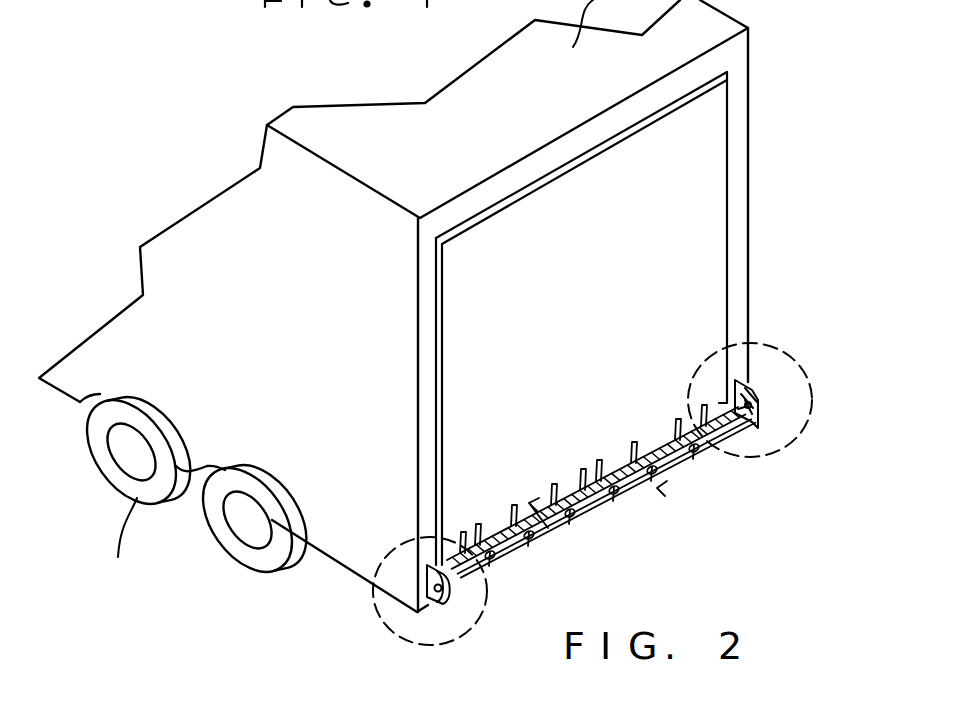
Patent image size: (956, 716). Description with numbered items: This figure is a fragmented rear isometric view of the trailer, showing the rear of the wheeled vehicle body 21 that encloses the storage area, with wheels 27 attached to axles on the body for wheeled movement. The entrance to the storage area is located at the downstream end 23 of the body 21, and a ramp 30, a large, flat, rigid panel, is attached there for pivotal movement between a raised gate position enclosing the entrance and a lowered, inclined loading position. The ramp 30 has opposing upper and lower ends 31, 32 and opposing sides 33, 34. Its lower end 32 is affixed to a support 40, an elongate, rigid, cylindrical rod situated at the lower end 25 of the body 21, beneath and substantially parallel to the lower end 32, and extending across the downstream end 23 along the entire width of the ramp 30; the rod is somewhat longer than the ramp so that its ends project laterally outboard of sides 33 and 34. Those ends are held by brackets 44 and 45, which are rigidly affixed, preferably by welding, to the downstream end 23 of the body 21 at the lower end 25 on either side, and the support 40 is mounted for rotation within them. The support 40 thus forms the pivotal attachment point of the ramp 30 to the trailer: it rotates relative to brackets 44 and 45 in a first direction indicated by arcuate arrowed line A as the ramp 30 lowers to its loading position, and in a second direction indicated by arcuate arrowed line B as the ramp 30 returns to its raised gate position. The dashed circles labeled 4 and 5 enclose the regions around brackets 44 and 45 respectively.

The wheeled vehicle body 21 is at (750, 97).
The downstream end 23 is at (740, 212).
The lower end 25 is at (330, 560).
The wheels 27 is at (227, 548).
The ramp 30 is at (720, 168).
The upper end 31 is at (597, 160).
The lower end 32 is at (611, 458).
The side 33 is at (437, 397).
The side 34 is at (727, 258).
The support 40 is at (583, 520).
The bracket 44 is at (446, 604).
The bracket 45 is at (757, 386).
The detail circle FIG. 4 is at (390, 558).
The detail circle FIG. 5 is at (705, 372).
The arcuate arrowed line A is at (659, 488).
The arcuate arrowed line B is at (528, 554).